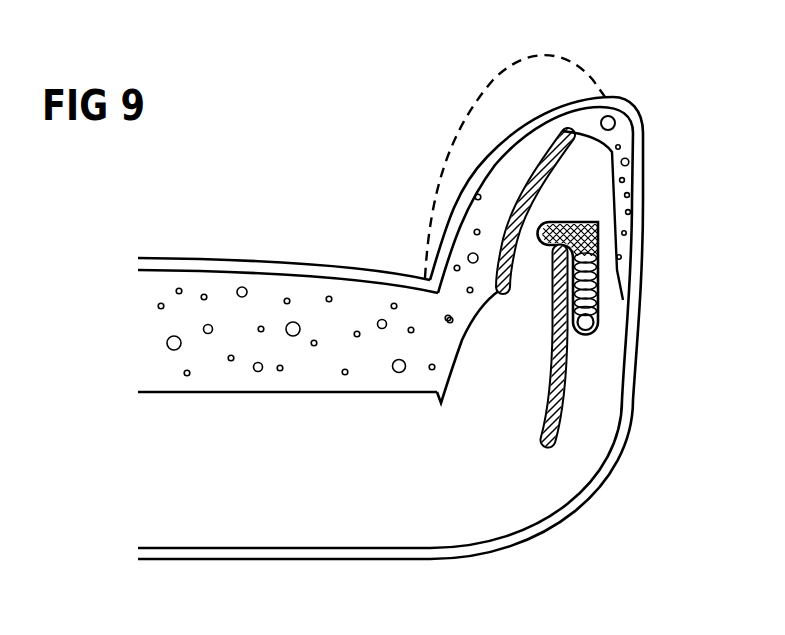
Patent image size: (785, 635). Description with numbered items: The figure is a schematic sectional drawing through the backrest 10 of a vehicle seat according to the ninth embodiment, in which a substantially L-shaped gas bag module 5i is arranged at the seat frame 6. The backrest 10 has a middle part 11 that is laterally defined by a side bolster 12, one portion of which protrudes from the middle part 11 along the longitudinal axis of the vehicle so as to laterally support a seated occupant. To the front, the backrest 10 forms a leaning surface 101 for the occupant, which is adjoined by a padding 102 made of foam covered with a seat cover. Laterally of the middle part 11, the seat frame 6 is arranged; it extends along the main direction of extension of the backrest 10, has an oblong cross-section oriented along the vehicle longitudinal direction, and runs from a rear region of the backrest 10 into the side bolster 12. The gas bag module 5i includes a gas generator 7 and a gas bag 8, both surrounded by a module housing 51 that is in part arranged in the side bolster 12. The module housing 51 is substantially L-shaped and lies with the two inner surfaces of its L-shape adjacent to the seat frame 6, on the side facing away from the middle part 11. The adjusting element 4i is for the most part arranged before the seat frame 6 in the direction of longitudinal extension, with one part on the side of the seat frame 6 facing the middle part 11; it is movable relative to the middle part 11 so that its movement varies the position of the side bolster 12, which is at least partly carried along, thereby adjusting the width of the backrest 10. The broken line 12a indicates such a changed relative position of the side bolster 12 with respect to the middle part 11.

The backrest 10 is at (574, 533).
The middle part 11 is at (191, 248).
The leaning surface 101 is at (250, 268).
The padding 102 is at (170, 322).
The side bolster 12 is at (478, 157).
The broken line 12a is at (500, 68).
The adjusting element 4i is at (552, 173).
The gas bag module 5i is at (600, 280).
The module housing 51 is at (599, 302).
The seat frame 6 is at (560, 428).
The gas generator 7 is at (599, 321).
The gas bag 8 is at (597, 235).